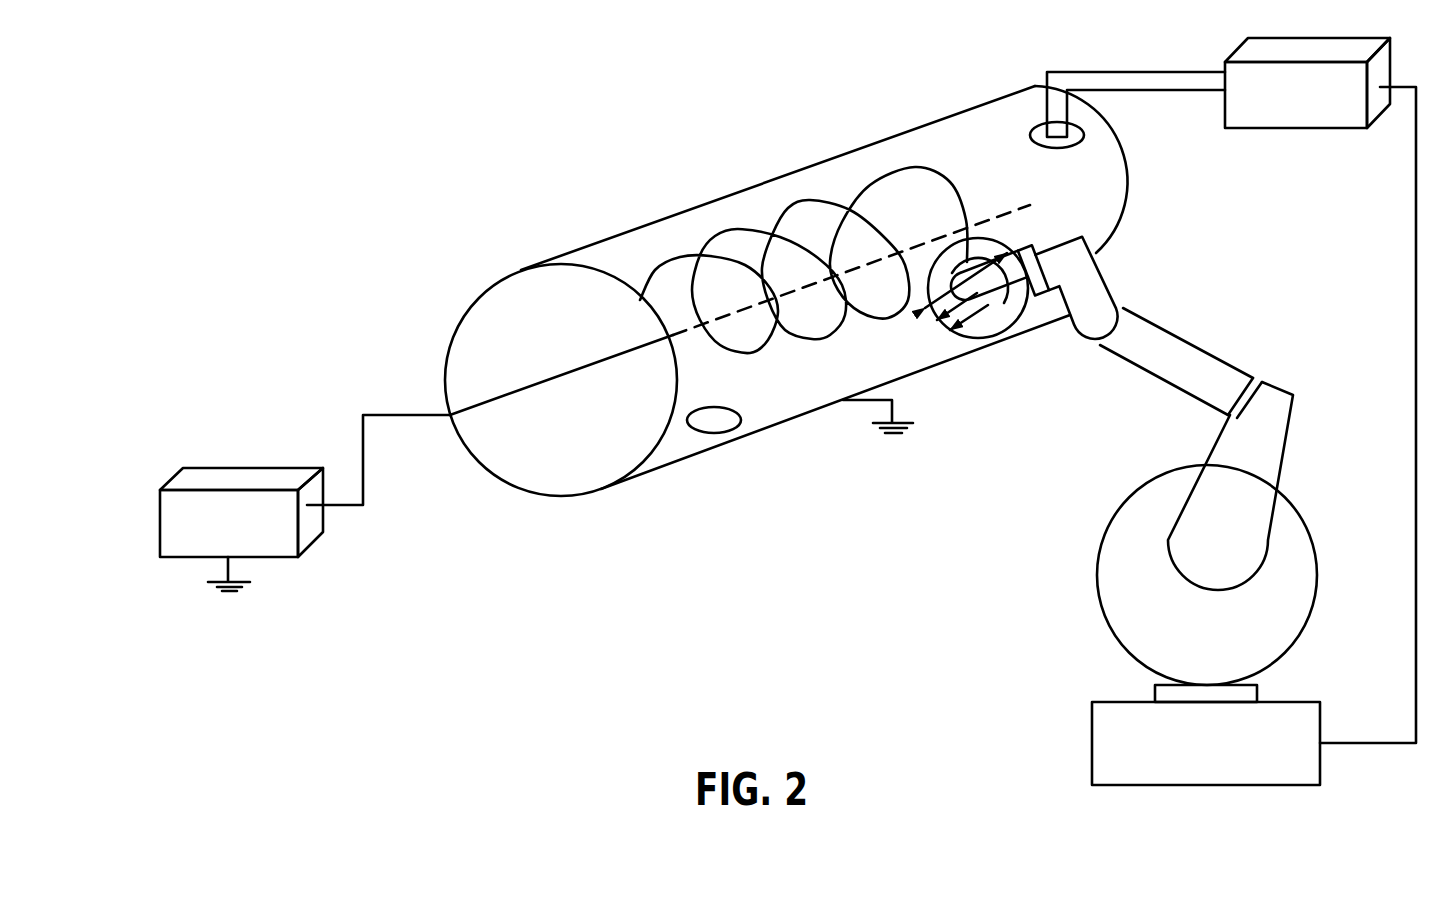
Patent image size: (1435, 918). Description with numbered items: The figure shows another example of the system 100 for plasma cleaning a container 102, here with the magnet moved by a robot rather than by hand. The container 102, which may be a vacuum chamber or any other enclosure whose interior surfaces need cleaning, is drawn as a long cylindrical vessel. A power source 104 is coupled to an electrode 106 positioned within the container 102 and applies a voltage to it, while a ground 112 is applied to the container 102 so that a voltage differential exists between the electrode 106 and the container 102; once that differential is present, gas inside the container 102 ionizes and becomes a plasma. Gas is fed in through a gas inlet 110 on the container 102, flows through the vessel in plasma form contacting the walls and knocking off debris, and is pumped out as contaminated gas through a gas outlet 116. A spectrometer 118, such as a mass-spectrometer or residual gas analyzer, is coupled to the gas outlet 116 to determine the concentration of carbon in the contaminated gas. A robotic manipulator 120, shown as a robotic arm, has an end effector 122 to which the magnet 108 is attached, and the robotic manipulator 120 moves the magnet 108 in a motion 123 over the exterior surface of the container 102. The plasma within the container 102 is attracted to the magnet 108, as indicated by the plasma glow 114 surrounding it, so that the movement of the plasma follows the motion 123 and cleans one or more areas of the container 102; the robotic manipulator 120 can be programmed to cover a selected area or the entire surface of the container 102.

The system 100 is at (370, 90).
The container 102 is at (654, 216).
The power source 104 is at (224, 464).
The electrode 106 is at (1007, 202).
The magnet 108 is at (997, 302).
The gas inlet 110 is at (713, 440).
The ground 112 is at (905, 398).
The plasma glow 114 is at (953, 342).
The gas outlet 116 is at (1061, 152).
The spectrometer 118 is at (1287, 31).
The robotic manipulator 120 is at (1288, 346).
The end effector 122 is at (1097, 252).
The motion 123 is at (937, 158).